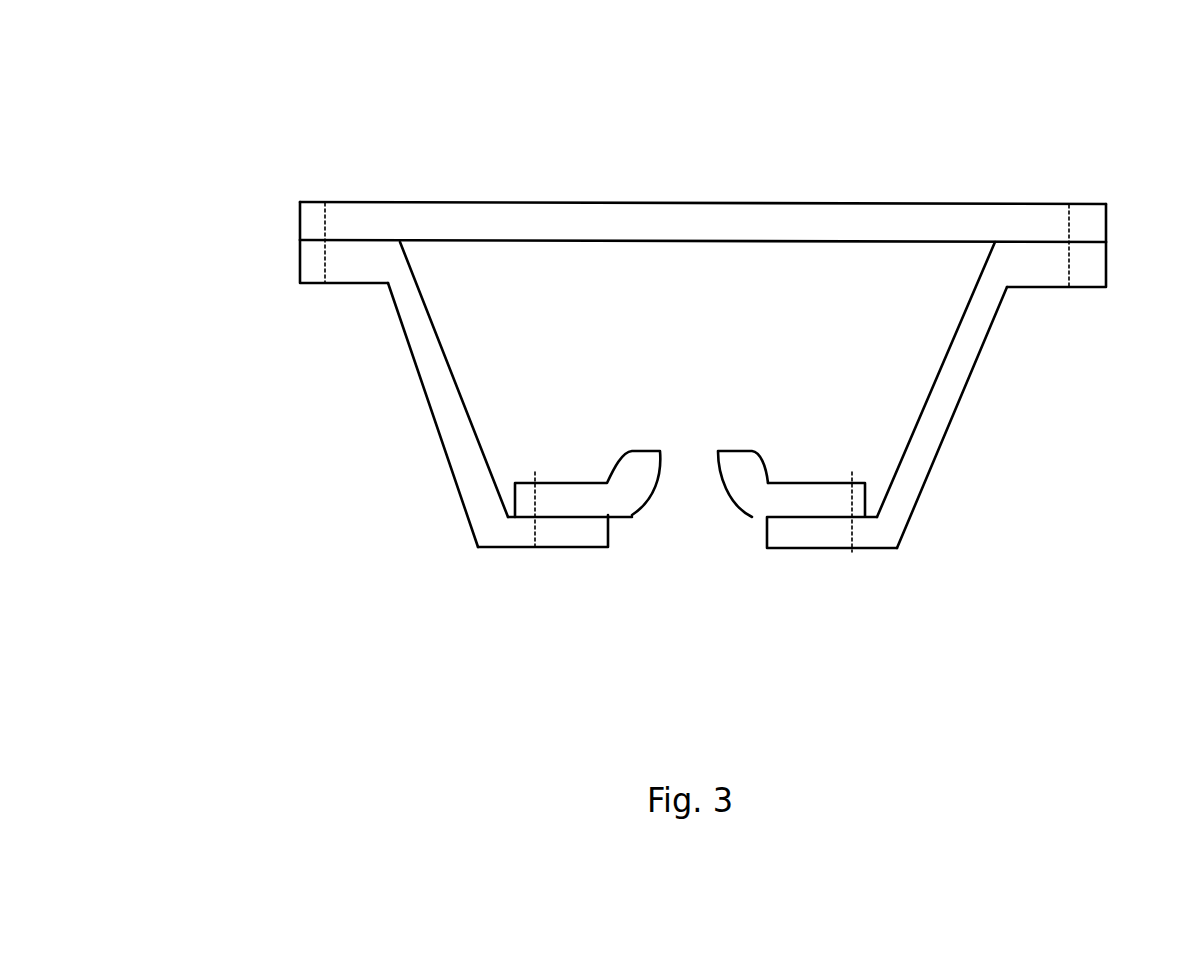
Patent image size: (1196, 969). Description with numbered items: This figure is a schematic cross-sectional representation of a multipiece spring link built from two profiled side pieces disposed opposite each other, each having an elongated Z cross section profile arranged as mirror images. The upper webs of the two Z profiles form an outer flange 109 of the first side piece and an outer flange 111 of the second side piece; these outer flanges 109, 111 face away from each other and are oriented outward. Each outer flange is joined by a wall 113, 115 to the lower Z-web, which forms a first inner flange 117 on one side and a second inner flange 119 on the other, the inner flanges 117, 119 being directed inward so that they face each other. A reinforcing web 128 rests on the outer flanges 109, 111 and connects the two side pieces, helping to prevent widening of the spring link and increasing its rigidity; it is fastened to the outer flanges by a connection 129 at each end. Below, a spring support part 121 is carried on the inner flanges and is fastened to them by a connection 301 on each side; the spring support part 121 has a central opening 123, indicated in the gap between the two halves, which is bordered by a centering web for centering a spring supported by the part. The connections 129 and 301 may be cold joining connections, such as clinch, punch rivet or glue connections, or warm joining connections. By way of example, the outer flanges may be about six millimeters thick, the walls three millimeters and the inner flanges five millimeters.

The outer flange 109 is at (303, 272).
The outer flange 111 is at (1080, 262).
The wall 113 is at (427, 385).
The wall 115 is at (942, 405).
The first inner flange 117 is at (491, 526).
The second inner flange 119 is at (786, 525).
The spring support part 121 is at (626, 508).
The central opening 123 is at (689, 445).
The reinforcing web 128 is at (685, 227).
The connection 129 is at (321, 190).
The connection 301 is at (533, 550).